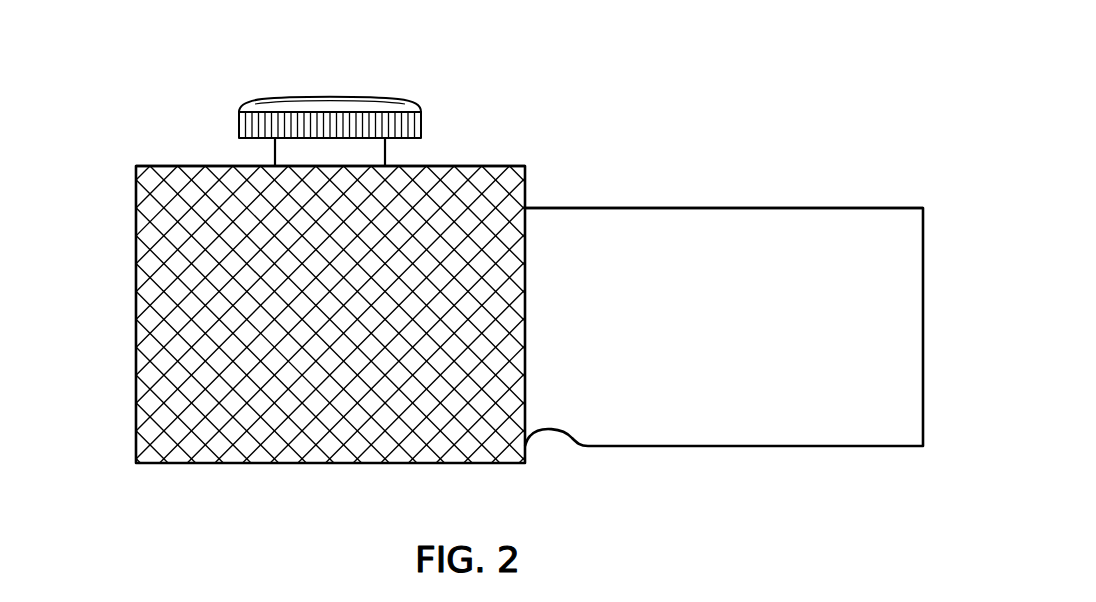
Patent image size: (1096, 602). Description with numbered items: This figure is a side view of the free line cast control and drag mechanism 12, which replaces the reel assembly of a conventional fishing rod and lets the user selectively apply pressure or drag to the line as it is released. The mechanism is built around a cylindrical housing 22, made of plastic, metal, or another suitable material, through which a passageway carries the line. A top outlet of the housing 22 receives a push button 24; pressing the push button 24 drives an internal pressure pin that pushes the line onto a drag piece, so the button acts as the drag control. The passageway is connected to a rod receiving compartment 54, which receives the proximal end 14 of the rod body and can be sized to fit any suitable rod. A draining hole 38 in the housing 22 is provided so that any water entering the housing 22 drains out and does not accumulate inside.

The free line cast control and drag mechanism 12 is at (136, 452).
The housing 22 is at (136, 178).
The push button 24 is at (328, 96).
The proximal end 14 is at (623, 447).
The rod receiving compartment 54 is at (783, 207).
The draining hole 38 is at (550, 430).